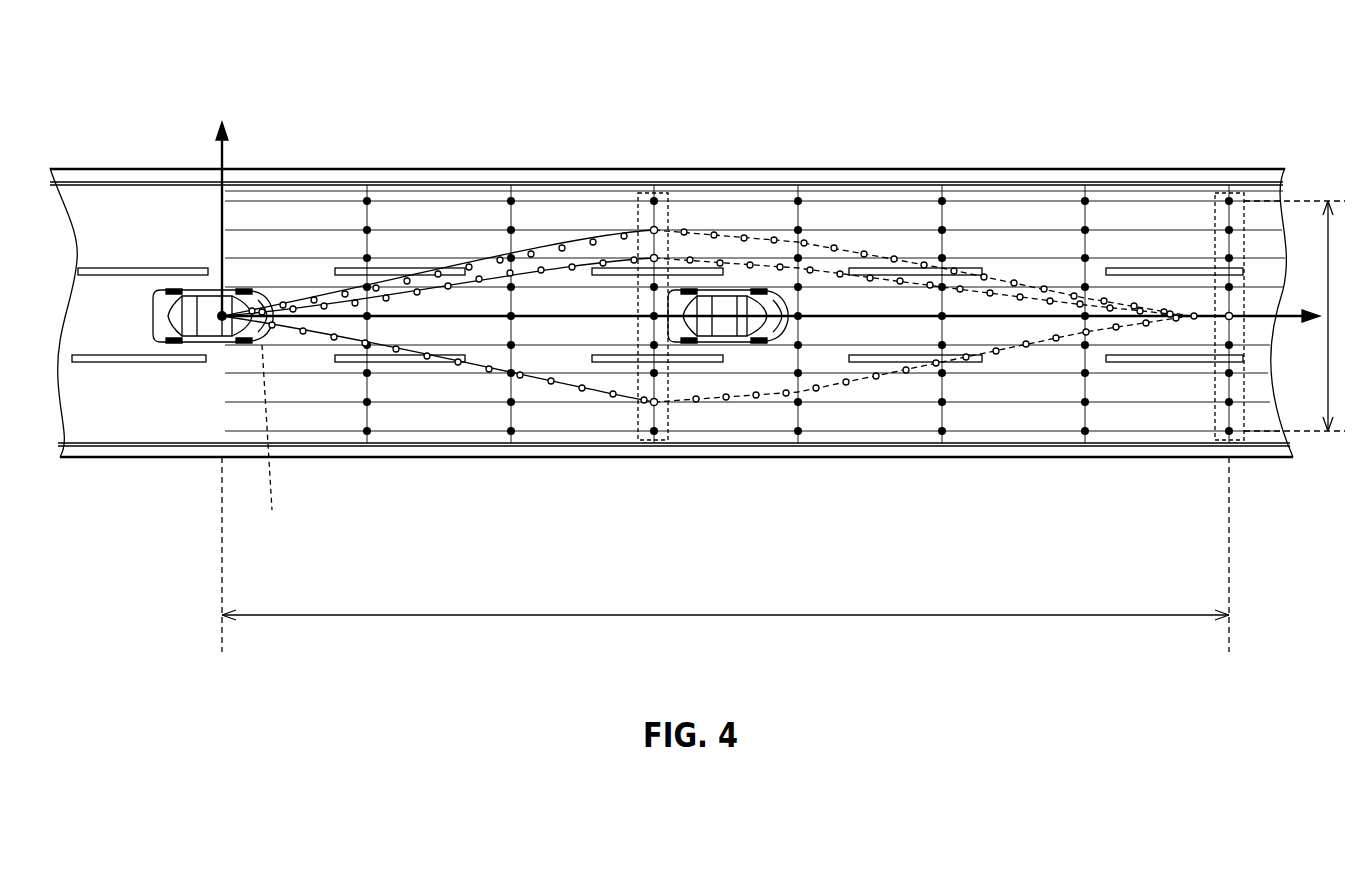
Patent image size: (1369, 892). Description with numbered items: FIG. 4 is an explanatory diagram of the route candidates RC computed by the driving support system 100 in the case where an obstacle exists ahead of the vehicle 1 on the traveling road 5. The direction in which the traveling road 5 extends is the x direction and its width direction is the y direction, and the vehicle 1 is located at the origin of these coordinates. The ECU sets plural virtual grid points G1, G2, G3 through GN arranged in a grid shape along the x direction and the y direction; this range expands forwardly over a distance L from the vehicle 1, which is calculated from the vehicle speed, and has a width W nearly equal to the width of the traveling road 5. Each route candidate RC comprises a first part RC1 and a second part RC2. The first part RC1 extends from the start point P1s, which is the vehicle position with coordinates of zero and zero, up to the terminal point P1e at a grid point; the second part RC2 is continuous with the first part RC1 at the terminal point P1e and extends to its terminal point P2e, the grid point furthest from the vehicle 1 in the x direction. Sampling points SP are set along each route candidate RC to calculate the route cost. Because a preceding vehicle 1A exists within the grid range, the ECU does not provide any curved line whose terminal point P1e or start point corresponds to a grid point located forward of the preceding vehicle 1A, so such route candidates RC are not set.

The vehicle 1 is at (177, 290).
The driving support system 100 is at (272, 444).
The traveling road 5 is at (443, 458).
The preceding vehicle 1A is at (770, 340).
The sampling points SP is at (330, 298).
The route candidates RC is at (828, 43).
The first part RC1 is at (628, 230).
The second part RC2 is at (755, 233).
The grid point G1 is at (367, 201).
The grid point G2 is at (367, 230).
The grid point G3 is at (367, 258).
The grid point GN is at (1217, 430).
The start point P1s is at (218, 322).
The terminal point P1e is at (668, 418).
The terminal point P2e is at (1245, 412).
The distance L is at (725, 554).
The width W is at (1300, 316).
The x direction x is at (771, 304).
The y direction y is at (220, 204).